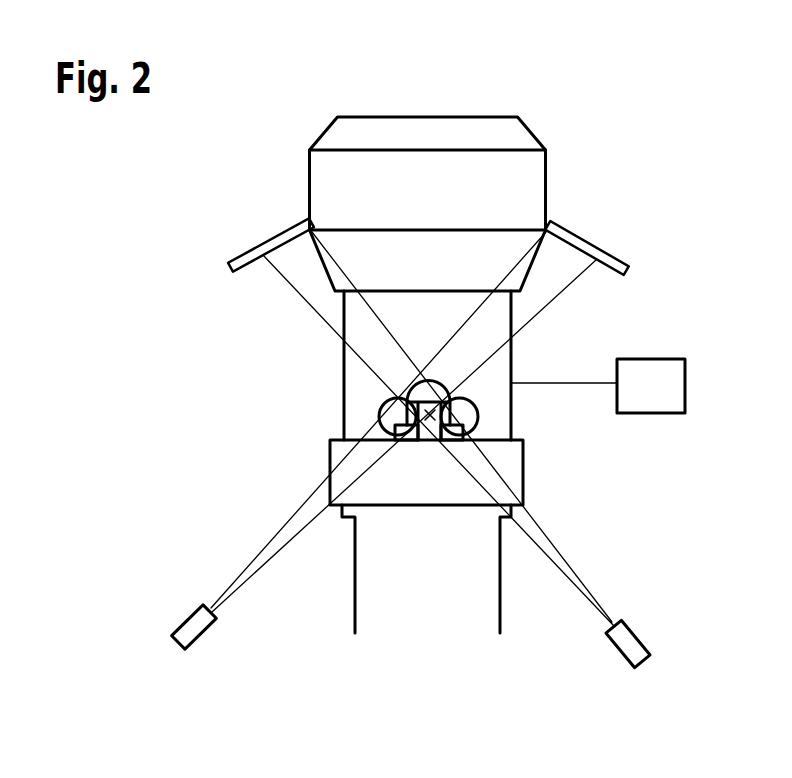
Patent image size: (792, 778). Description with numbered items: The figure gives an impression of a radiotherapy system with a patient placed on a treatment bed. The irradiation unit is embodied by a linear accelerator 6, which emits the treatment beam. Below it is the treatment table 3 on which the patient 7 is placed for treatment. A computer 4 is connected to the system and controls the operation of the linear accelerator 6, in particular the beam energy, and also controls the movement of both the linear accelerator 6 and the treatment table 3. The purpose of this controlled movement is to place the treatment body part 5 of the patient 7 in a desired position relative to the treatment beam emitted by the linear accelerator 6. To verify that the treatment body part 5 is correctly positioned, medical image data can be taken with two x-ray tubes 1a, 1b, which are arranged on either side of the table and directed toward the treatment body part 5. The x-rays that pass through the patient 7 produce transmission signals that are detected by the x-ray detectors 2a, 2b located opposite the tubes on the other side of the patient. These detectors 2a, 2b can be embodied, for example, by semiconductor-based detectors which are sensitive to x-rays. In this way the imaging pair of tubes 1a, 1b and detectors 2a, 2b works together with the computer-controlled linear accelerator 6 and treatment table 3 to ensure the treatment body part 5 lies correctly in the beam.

The x-ray tube 1a is at (640, 638).
The x-ray tube 1b is at (190, 612).
The x-ray detector 2a is at (270, 240).
The x-ray detector 2b is at (585, 242).
The treatment table 3 is at (328, 455).
The computer 4 is at (685, 386).
The treatment body part 5 is at (427, 383).
The linear accelerator 6 is at (428, 168).
The patient 7 is at (480, 412).